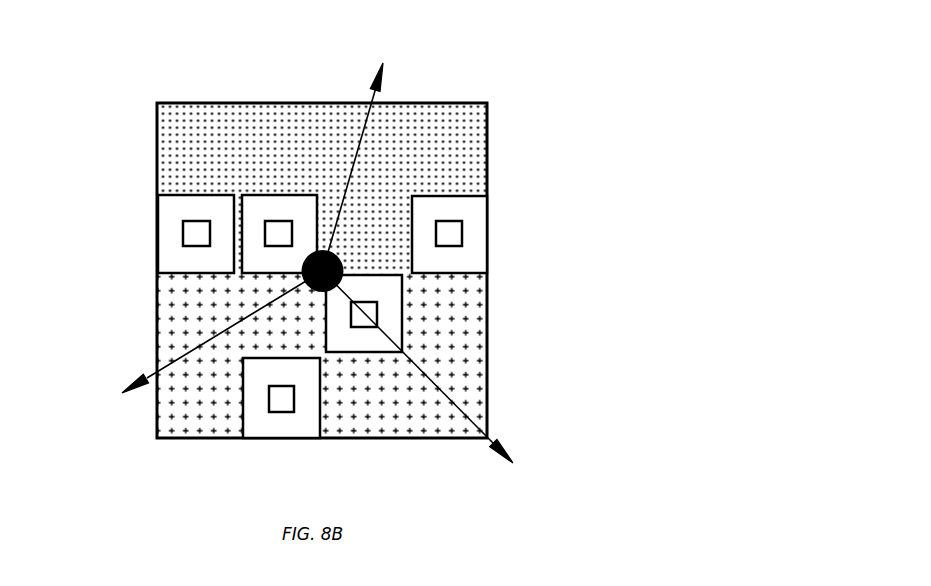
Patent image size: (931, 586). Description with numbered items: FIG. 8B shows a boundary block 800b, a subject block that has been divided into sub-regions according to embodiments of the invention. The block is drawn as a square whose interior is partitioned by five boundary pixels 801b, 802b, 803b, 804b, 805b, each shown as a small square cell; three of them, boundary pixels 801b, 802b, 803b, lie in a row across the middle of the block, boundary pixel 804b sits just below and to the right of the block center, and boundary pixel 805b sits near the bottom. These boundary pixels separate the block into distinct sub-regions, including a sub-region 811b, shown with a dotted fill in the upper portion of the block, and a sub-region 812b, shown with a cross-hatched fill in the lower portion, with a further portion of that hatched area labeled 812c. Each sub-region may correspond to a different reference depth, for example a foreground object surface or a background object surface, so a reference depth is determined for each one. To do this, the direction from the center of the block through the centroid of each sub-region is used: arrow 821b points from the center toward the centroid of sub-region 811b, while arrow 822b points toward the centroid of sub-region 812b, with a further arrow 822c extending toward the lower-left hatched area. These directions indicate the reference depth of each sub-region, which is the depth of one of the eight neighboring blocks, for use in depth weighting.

The boundary block 800b is at (551, 43).
The boundary pixel 801b is at (168, 230).
The boundary pixel 802b is at (258, 200).
The boundary pixel 803b is at (476, 224).
The boundary pixel 804b is at (393, 297).
The boundary pixel 805b is at (283, 412).
The sub-region 811b is at (250, 103).
The sub-region 812b is at (487, 327).
The second region portion 812c is at (181, 440).
The arrow 821b is at (381, 85).
The arrow 822b is at (498, 442).
The third direction arrow 822c is at (135, 382).